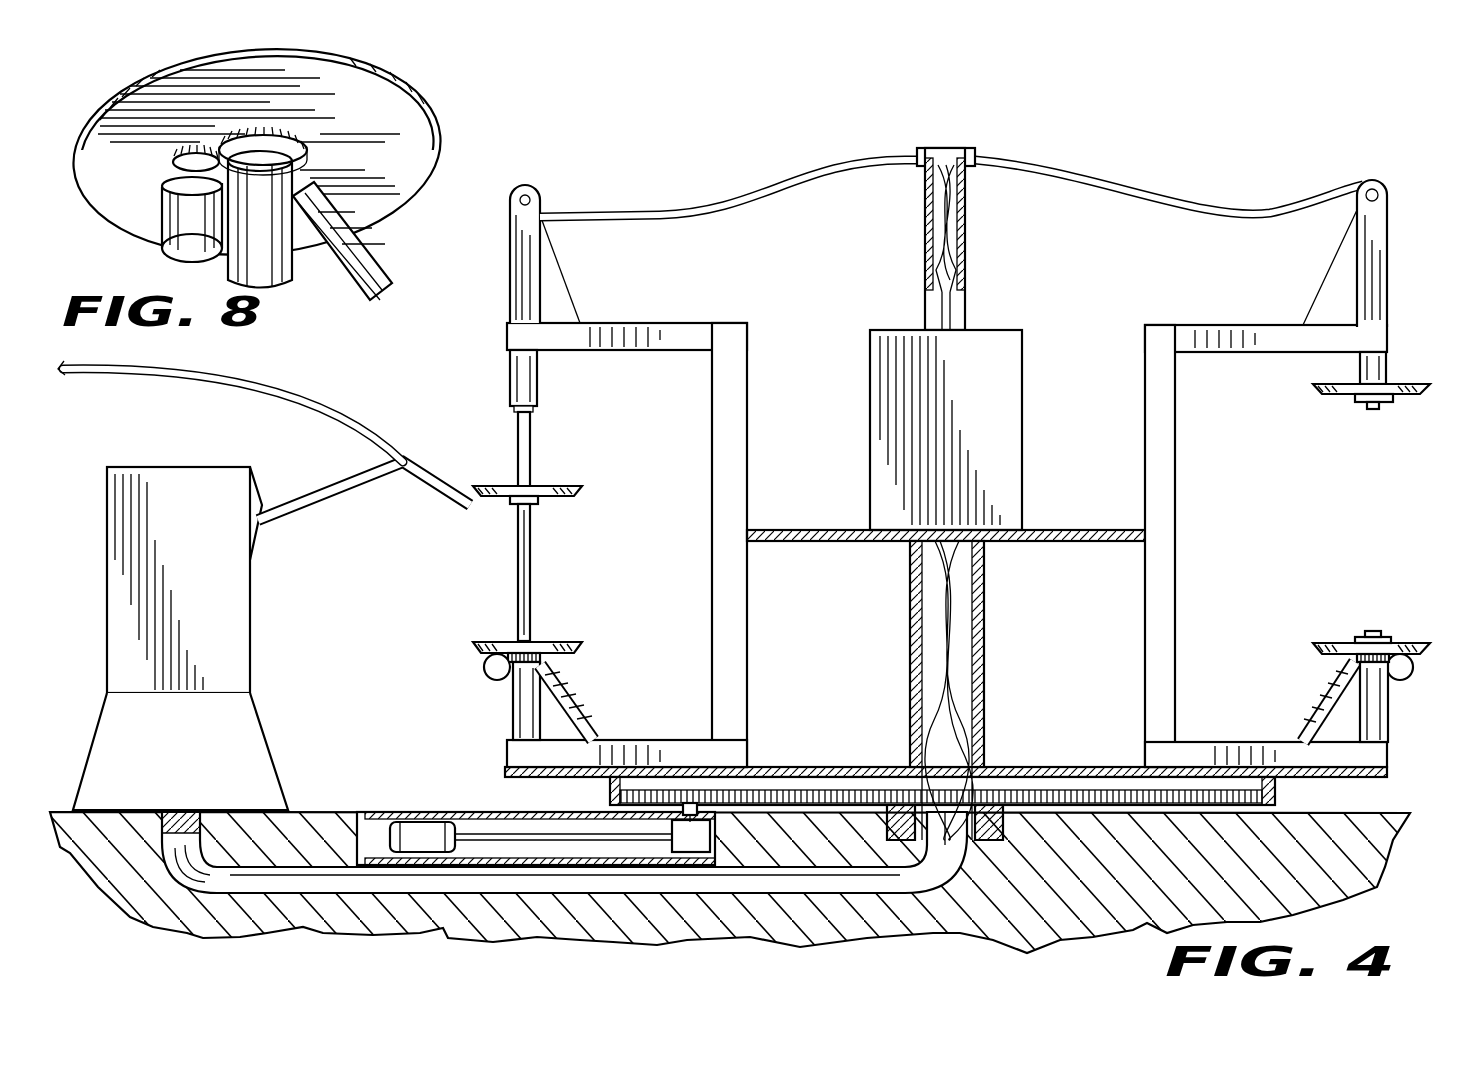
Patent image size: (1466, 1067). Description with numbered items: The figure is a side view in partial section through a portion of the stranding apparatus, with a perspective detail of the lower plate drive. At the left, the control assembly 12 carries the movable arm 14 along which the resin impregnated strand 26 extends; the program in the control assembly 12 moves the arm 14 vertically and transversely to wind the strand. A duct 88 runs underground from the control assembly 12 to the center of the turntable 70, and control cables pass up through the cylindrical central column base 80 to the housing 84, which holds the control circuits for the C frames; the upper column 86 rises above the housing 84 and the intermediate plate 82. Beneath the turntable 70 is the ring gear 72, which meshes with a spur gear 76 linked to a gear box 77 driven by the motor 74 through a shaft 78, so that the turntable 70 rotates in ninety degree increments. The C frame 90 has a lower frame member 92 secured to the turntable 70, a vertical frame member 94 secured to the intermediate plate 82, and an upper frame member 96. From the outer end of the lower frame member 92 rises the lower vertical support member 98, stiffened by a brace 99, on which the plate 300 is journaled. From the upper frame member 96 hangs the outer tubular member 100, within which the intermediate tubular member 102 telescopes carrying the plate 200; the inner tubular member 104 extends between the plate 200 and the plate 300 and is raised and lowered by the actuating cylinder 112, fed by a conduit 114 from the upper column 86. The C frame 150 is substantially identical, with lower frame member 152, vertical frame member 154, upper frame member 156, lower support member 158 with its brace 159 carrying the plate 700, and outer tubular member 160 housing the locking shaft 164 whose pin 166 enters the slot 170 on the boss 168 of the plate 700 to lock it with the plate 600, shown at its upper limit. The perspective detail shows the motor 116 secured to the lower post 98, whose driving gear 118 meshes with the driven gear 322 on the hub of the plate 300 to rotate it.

In FIG. 4, the control assembly 12 is at (193, 460).
In FIG. 4, the movable arm 14 is at (330, 488).
In FIG. 4, the resin impregnated strand 26 is at (285, 388).
In FIG. 4, the turntable 70 is at (1045, 764).
In FIG. 4, the ring gear 72 is at (610, 795).
In FIG. 4, the motor 74 is at (424, 822).
In FIG. 4, the spur gear 76 is at (695, 800).
In FIG. 4, the gear box 77 is at (712, 838).
In FIG. 4, the shaft 78 is at (532, 834).
In FIG. 4, the central column base 80 is at (982, 674).
In FIG. 4, the intermediate plate 82 is at (1097, 530).
In FIG. 4, the housing 84 is at (1012, 406).
In FIG. 4, the upper column 86 is at (958, 305).
In FIG. 4, the duct 88 is at (823, 870).
In FIG. 4, the C frame 90 is at (627, 520).
In FIG. 4, the lower frame member 92 is at (636, 742).
In FIG. 4, the vertical frame member 94 is at (714, 642).
In FIG. 4, the upper frame member 96 is at (642, 348).
In FIG. 8, the lower vertical support member 98 is at (292, 197).
In FIG. 4, the lower vertical support member 98 is at (517, 695).
In FIG. 8, the brace 99 is at (360, 276).
In FIG. 4, the brace 99 is at (576, 716).
In FIG. 4, the outer tubular member 100 is at (520, 382).
In FIG. 4, the intermediate tubular member 102 is at (522, 460).
In FIG. 4, the inner tubular member 104 is at (528, 566).
In FIG. 4, the actuating cylinder 112 is at (512, 250).
In FIG. 4, the conduit 114 is at (735, 208).
In FIG. 8, the motor 116 is at (163, 216).
In FIG. 4, the motor 116 is at (484, 666).
In FIG. 8, the driving gear 118 is at (172, 166).
In FIG. 4, the C frame 150 is at (1266, 512).
In FIG. 4, the lower frame member 152 is at (1228, 745).
In FIG. 4, the vertical frame member 154 is at (1168, 640).
In FIG. 4, the upper frame member 156 is at (1200, 348).
In FIG. 4, the lower support member 158 is at (1385, 712).
In FIG. 4, the brace 159 is at (1328, 708).
In FIG. 4, the outer tubular member 160 is at (1386, 372).
In FIG. 4, the locking shaft 164 is at (1375, 410).
In FIG. 4, the pin 166 is at (1368, 404).
In FIG. 4, the boss 168 is at (1385, 638).
In FIG. 4, the slot 170 is at (1375, 631).
In FIG. 4, the plate 200 is at (560, 478).
In FIG. 8, the plate 300 is at (406, 84).
In FIG. 4, the plate 300 is at (580, 630).
In FIG. 8, the driven gear 322 is at (285, 140).
In FIG. 4, the plate 600 is at (1318, 397).
In FIG. 4, the plate 700 is at (1338, 640).